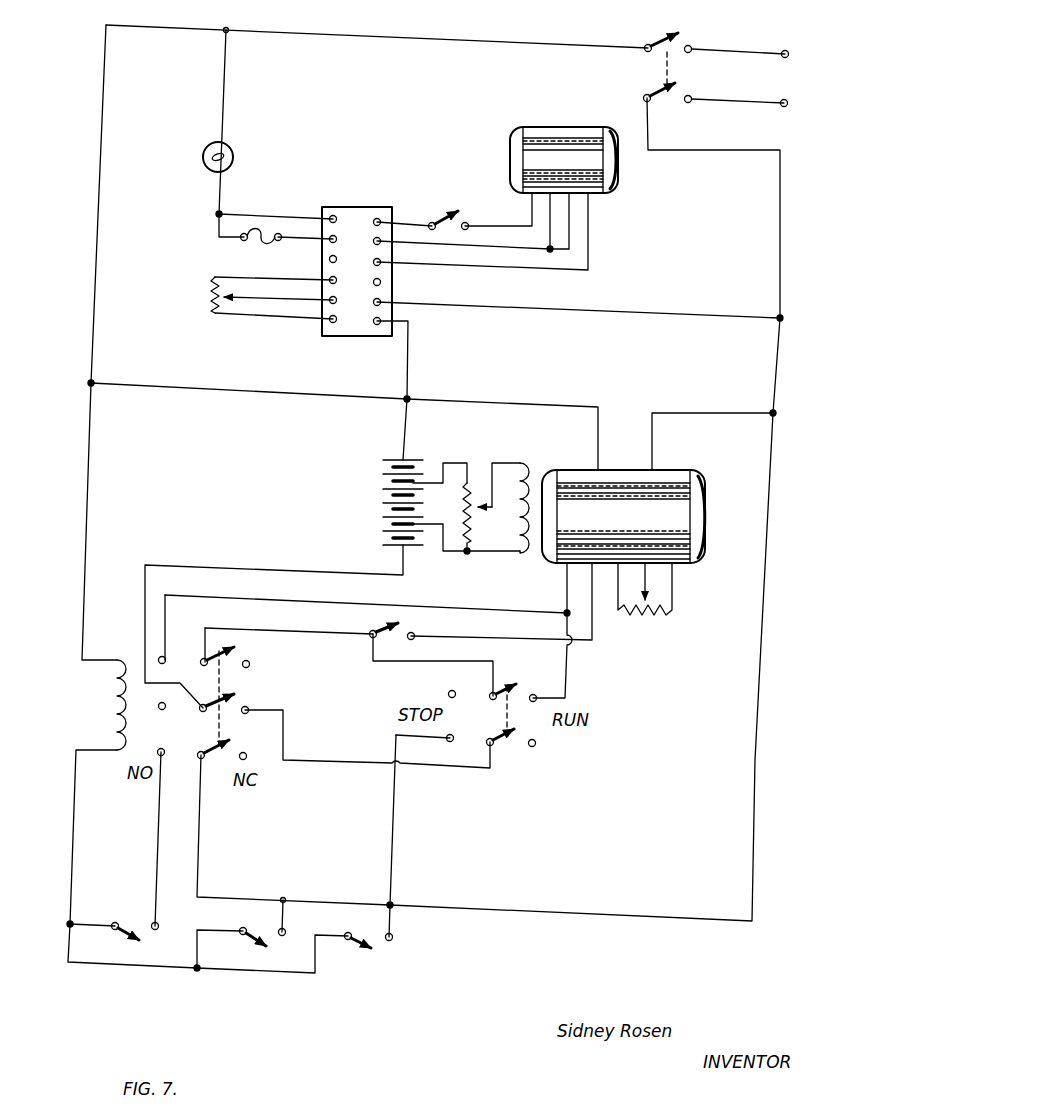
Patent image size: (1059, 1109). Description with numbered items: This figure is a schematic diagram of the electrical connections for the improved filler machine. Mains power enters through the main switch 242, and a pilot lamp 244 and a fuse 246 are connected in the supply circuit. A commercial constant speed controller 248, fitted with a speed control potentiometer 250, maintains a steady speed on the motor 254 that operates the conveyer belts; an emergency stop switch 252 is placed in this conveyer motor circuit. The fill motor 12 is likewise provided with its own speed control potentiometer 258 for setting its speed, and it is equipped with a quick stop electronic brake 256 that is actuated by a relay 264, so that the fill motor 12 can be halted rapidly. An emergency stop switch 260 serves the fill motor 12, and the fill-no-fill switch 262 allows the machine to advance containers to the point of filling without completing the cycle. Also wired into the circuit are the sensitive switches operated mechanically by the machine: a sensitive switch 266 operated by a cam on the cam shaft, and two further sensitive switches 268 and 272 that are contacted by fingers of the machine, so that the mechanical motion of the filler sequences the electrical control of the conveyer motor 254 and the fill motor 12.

The fill motor 12 is at (630, 520).
The main switch 242 is at (682, 42).
The pilot lamp 244 is at (236, 158).
The fuse 246 is at (258, 247).
The constant speed controller 248 is at (355, 207).
The speed control potentiometer 250 is at (212, 296).
The emergency stop switch 252 is at (447, 213).
The motor 254 is at (550, 125).
The quick stop electronic brake 256 is at (470, 457).
The speed control potentiometer 258 is at (633, 613).
The emergency stop switch 260 is at (497, 745).
The fill-no-fill switch 262 is at (405, 627).
The relay 264 is at (108, 704).
The sensitive switch 266 is at (130, 922).
The sensitive switch 268 is at (252, 945).
The sensitive switch 272 is at (357, 953).